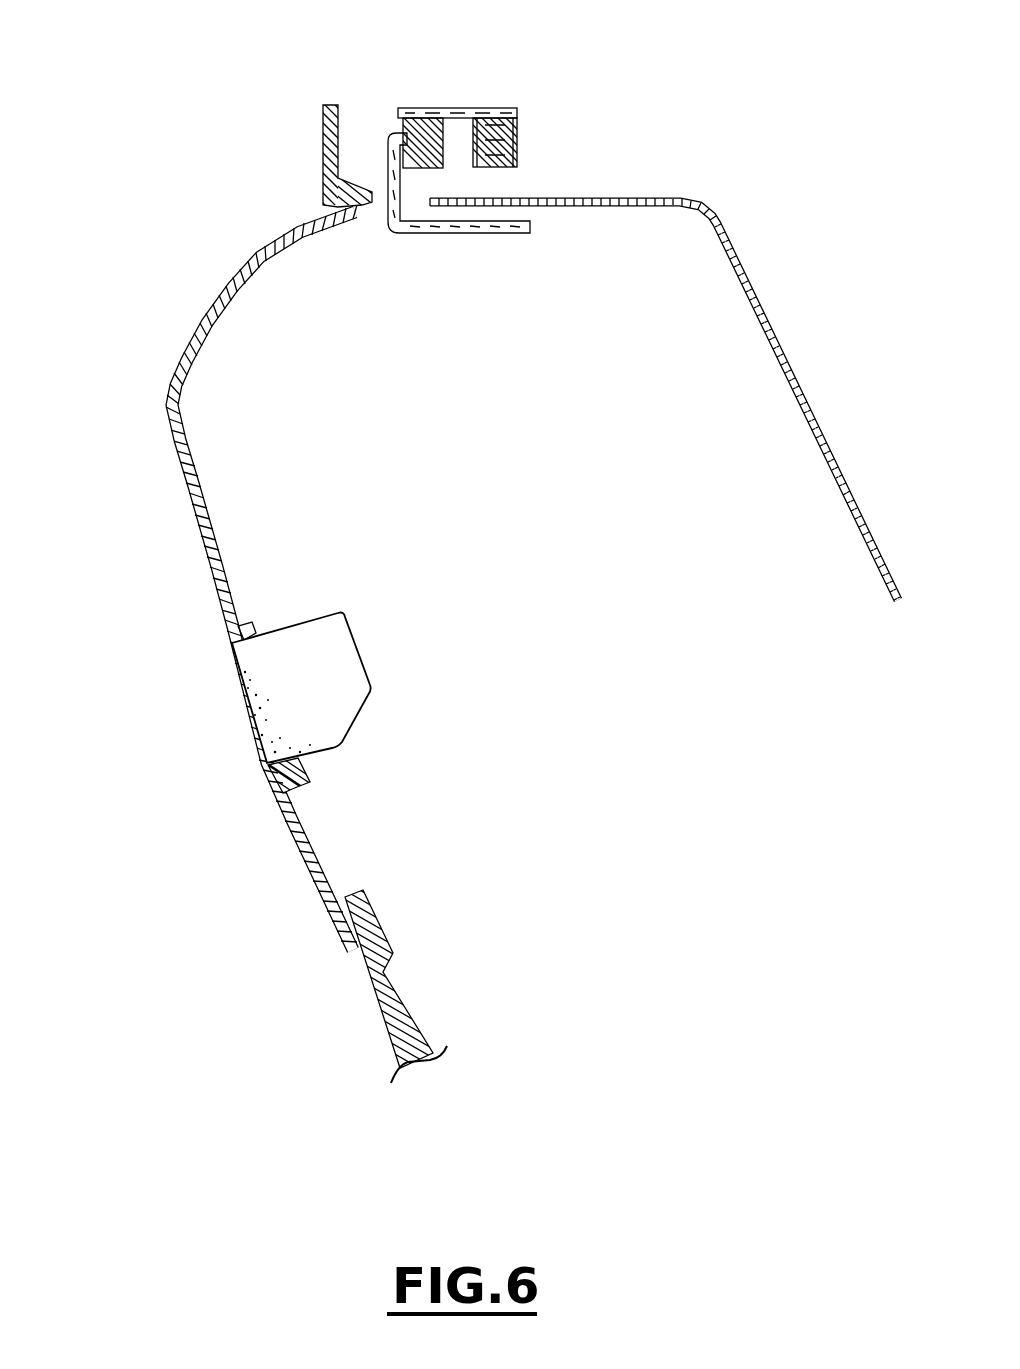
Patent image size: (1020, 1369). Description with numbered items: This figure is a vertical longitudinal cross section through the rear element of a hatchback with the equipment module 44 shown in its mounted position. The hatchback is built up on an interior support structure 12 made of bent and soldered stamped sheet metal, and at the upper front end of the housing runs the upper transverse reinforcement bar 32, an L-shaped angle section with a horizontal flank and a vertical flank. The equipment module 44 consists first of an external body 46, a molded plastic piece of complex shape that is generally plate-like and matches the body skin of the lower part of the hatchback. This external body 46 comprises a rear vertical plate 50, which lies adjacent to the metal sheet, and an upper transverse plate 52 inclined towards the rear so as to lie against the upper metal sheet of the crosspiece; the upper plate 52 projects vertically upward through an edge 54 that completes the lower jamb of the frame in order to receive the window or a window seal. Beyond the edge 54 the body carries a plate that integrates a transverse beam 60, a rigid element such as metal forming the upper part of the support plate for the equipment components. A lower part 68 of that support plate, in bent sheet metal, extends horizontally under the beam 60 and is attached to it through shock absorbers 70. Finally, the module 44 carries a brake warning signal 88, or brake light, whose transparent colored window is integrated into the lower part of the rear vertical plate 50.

The interior support structure 12 is at (675, 755).
The upper transverse reinforcement bar 32 is at (728, 213).
The equipment module 44 is at (172, 576).
The external body 46 is at (189, 335).
The rear vertical plate 50 is at (314, 870).
The upper transverse plate 52 is at (258, 283).
The edge 54 is at (340, 127).
The transverse beam 60 is at (492, 98).
The lower part 68 is at (475, 240).
The shock absorbers 70 is at (517, 122).
The brake warning signal 88 is at (372, 677).